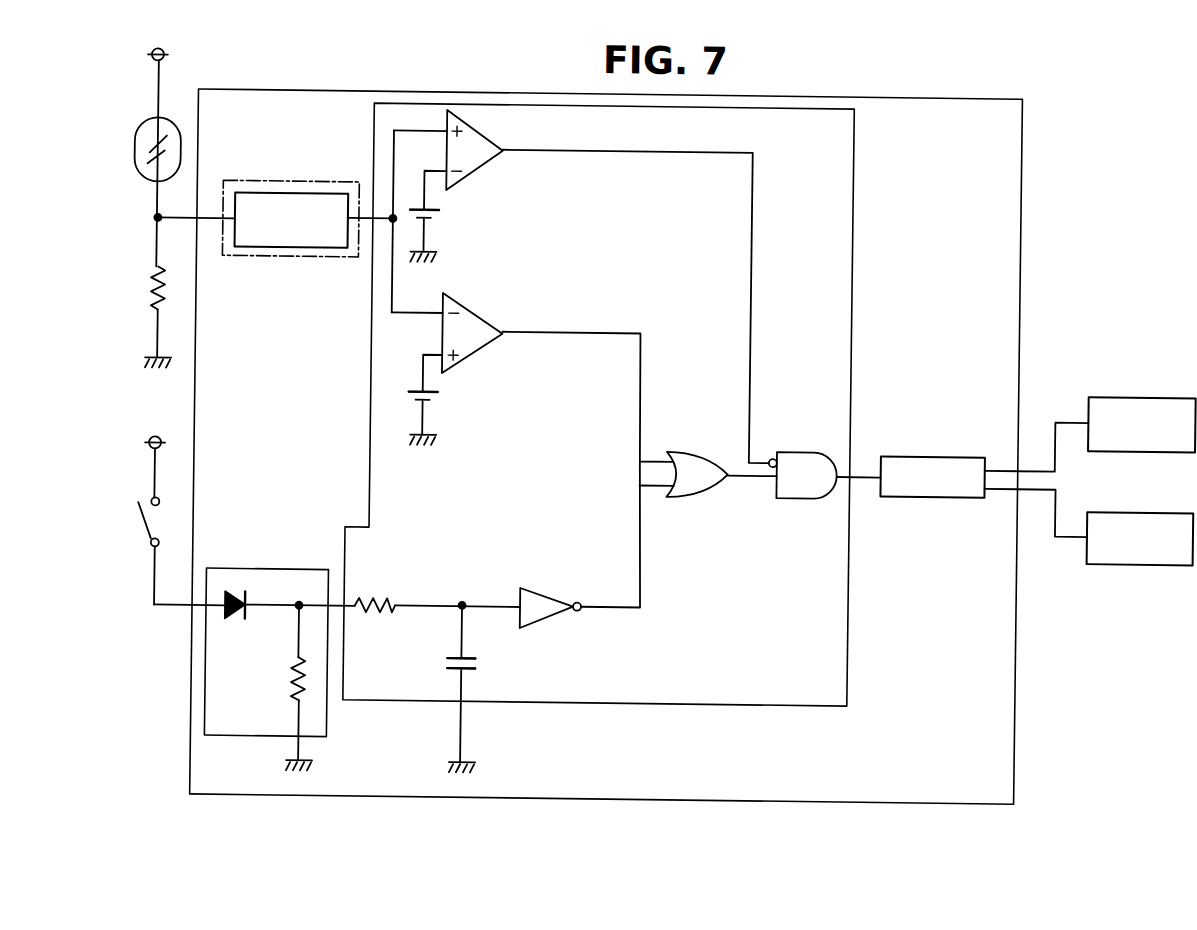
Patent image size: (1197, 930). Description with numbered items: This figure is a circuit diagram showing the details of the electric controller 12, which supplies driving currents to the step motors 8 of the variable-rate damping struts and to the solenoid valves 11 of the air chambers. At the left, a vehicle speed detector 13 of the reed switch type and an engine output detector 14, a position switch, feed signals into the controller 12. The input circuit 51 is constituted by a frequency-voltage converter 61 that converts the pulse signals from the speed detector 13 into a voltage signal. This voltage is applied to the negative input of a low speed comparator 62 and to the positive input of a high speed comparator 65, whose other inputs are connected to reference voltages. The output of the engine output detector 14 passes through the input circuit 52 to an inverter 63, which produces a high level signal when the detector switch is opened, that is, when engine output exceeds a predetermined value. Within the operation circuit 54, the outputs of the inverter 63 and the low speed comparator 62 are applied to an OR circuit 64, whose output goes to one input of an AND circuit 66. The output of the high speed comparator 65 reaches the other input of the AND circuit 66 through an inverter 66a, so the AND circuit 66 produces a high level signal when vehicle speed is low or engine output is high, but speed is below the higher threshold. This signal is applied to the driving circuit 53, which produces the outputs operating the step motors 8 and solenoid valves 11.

The step motor 8 is at (1149, 390).
The solenoid valve 11 is at (1163, 505).
The electric controller 12 is at (991, 93).
The vehicle speed detector 13 is at (136, 136).
The engine output detector 14 is at (141, 538).
The input circuit 51 is at (291, 225).
The input circuit 52 is at (285, 571).
The driving circuit 53 is at (956, 453).
The operation circuit 54 is at (854, 219).
The frequency-voltage (F-V) converter 61 is at (307, 197).
The low speed comparator 62 is at (488, 316).
The inverter 63 is at (553, 593).
The OR circuit 64 is at (697, 447).
The high speed comparator 65 is at (483, 166).
The AND circuit 66 is at (798, 442).
The inverter 66a is at (773, 456).